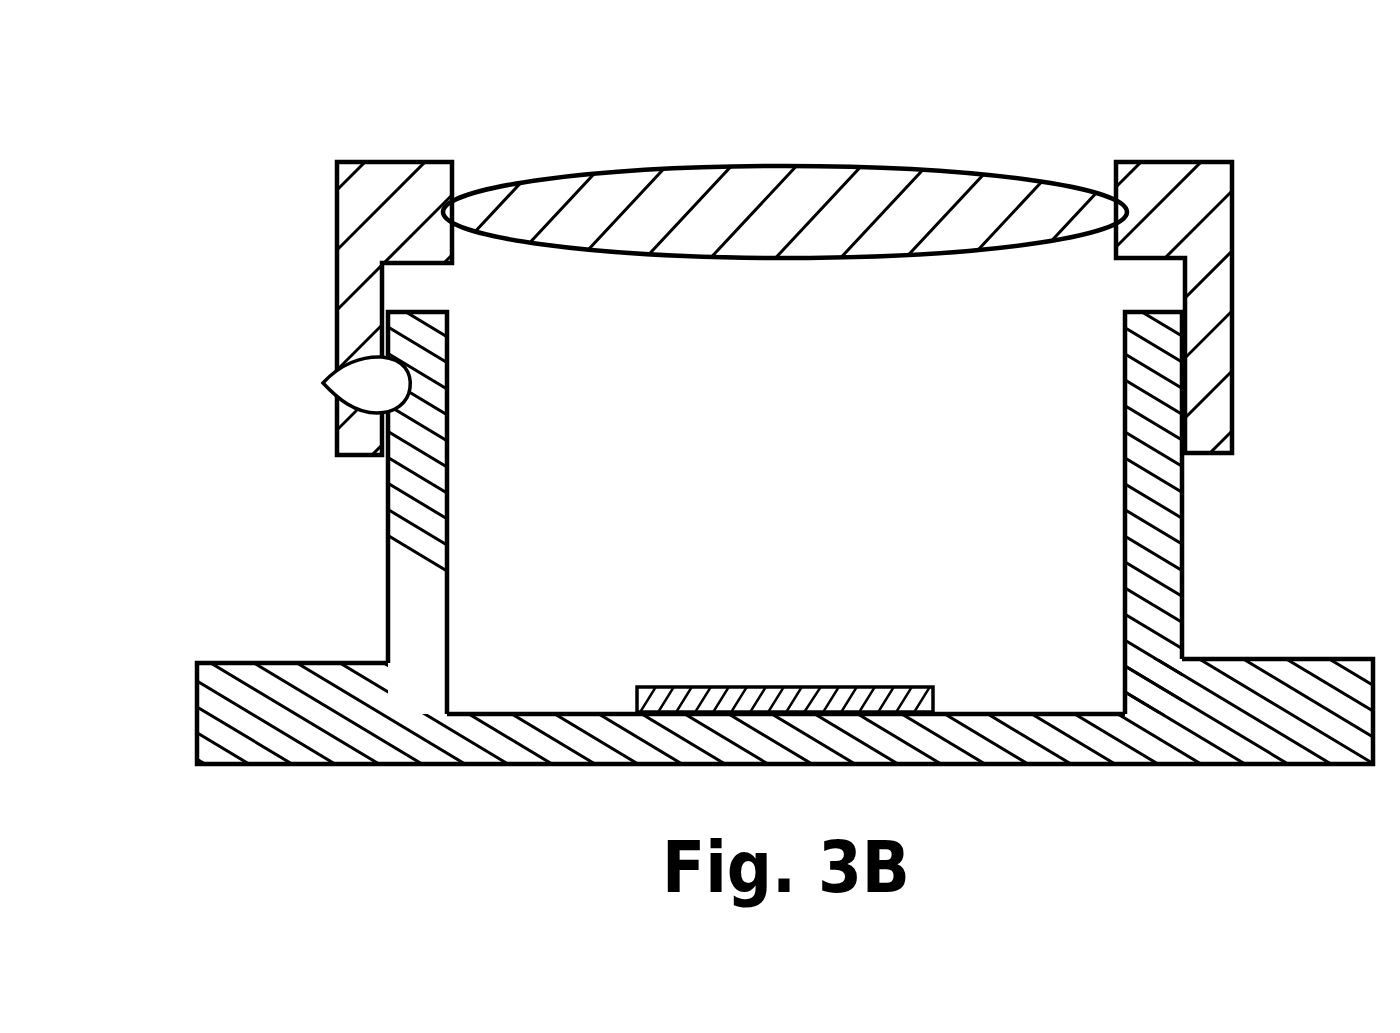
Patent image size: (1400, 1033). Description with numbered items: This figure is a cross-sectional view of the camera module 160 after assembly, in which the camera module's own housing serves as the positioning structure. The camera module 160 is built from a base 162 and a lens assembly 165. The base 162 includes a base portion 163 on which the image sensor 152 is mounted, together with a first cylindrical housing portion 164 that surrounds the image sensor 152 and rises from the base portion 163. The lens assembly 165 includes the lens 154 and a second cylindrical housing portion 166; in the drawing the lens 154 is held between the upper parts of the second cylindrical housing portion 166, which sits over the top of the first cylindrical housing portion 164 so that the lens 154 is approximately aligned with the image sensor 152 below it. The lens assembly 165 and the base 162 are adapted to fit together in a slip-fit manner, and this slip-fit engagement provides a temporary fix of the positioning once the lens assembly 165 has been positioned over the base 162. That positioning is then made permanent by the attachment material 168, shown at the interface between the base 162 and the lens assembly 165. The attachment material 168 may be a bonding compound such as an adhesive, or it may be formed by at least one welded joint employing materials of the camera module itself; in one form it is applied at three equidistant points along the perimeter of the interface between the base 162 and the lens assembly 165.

The image sensor 152 is at (683, 686).
The lens 154 is at (567, 178).
The camera module 160 is at (1225, 88).
The base 162 is at (700, 535).
The base portion 163 is at (295, 663).
The side walls of housing 164 is at (390, 562).
The lens assembly 165 is at (700, 285).
The second cylindrical housing portion 166 is at (337, 252).
The attachment material 168 is at (323, 383).